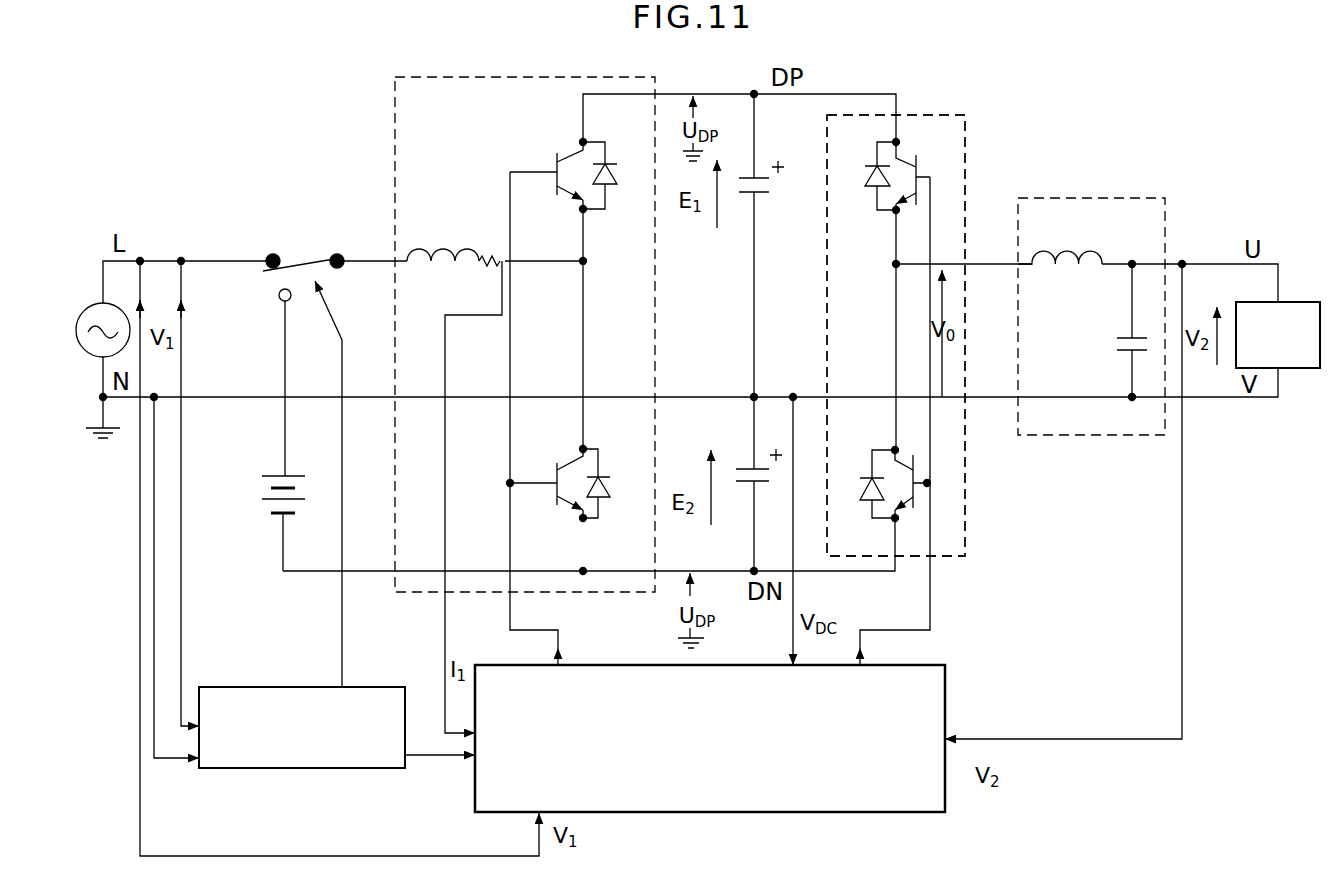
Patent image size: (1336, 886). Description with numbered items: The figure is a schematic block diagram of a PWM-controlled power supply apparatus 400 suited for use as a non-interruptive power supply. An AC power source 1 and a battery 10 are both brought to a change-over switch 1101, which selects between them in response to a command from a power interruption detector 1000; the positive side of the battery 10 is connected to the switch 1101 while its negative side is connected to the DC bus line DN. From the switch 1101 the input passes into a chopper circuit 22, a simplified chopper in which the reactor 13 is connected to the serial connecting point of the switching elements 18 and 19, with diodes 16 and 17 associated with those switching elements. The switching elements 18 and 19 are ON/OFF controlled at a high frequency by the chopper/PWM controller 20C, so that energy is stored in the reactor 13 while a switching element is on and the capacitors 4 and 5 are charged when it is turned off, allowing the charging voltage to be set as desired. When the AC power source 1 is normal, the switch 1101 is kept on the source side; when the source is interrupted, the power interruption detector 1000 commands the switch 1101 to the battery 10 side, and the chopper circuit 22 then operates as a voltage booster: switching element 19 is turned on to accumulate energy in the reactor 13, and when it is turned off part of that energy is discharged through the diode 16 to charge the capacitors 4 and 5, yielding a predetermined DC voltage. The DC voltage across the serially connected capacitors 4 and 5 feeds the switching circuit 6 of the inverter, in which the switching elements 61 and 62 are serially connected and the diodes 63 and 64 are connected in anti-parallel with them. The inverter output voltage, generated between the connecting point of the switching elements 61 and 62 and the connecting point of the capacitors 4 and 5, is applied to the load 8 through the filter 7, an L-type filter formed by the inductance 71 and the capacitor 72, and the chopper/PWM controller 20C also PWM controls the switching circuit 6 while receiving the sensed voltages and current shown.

The AC power source 1 is at (91, 302).
The change-over switch 1101 is at (302, 252).
The battery 10 is at (262, 488).
The reactor 13 is at (461, 242).
The chopper circuit 22 is at (649, 76).
The switching element 18 is at (554, 160).
The diode 16 is at (618, 169).
The switching element 19 is at (551, 473).
The diode 17 is at (610, 477).
The capacitor 4 is at (777, 187).
The capacitor 5 is at (771, 482).
The PWM-controlled power supply apparatus 400 is at (917, 76).
The switching circuit 6 is at (955, 115).
The switching element 61 is at (914, 166).
The switching element 62 is at (926, 478).
The diode 63 is at (863, 167).
The diode 64 is at (861, 492).
The filter 7 is at (1138, 198).
The inductance 71 is at (1066, 278).
The capacitor 72 is at (1107, 346).
The load 8 is at (1290, 302).
The chopper/PWM controller 20C is at (948, 700).
The power interruption detector 1000 is at (378, 770).